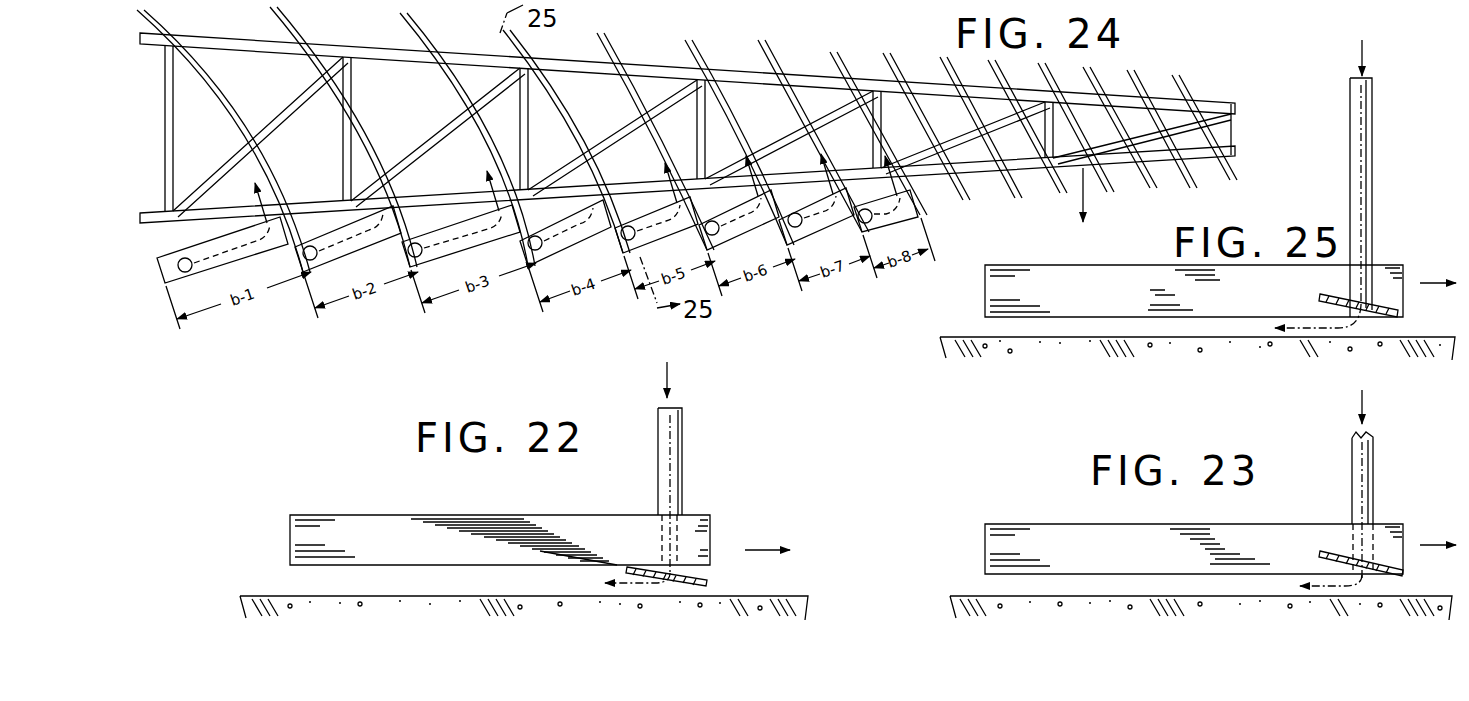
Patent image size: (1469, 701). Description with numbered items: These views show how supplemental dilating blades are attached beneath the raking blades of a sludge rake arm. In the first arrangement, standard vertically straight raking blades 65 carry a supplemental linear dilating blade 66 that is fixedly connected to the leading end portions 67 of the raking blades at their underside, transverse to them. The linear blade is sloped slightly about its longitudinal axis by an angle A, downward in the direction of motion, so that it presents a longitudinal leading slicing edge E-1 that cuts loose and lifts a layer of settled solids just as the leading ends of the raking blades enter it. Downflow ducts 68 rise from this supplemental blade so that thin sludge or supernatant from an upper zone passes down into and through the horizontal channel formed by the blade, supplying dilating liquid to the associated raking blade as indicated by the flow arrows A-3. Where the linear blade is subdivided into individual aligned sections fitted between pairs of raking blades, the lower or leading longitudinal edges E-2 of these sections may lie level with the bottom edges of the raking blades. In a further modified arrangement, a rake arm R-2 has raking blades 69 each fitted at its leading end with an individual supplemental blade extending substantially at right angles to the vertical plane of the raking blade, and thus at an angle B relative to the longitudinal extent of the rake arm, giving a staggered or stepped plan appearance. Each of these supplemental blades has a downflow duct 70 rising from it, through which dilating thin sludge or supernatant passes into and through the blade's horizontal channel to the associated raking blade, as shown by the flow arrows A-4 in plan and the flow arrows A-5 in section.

In FIG. 22, the raking blades 65 is at (420, 528).
In FIG. 23, the raking blades 65 is at (1078, 537).
In FIG. 22, the supplemental linear dilating blade 66 is at (677, 581).
In FIG. 22, the leading end portions 67 is at (703, 547).
In FIG. 23, the leading end portions 67 is at (1392, 560).
In FIG. 22, the downflow ducts 68 is at (677, 450).
In FIG. 23, the downflow ducts 68 is at (1362, 477).
In FIG. 24, the raking blades 69 is at (363, 143).
In FIG. 25, the raking blades 69 is at (1048, 268).
In FIG. 24, the downflow duct 70 is at (182, 259).
In FIG. 25, the downflow duct 70 is at (1366, 177).
In FIG. 22, the angle A is at (557, 552).
In FIG. 22, the flow arrows A-3 is at (618, 582).
In FIG. 24, the flow arrows A-4 is at (361, 181).
In FIG. 25, the flow arrows A-5 is at (1293, 327).
In FIG. 24, the angle B is at (423, 160).
In FIG. 22, the leading slicing edge E-1 is at (708, 583).
In FIG. 23, the leading longitudinal edges E-2 is at (1403, 573).
In FIG. 24, the rake arm R-2 is at (1195, 72).